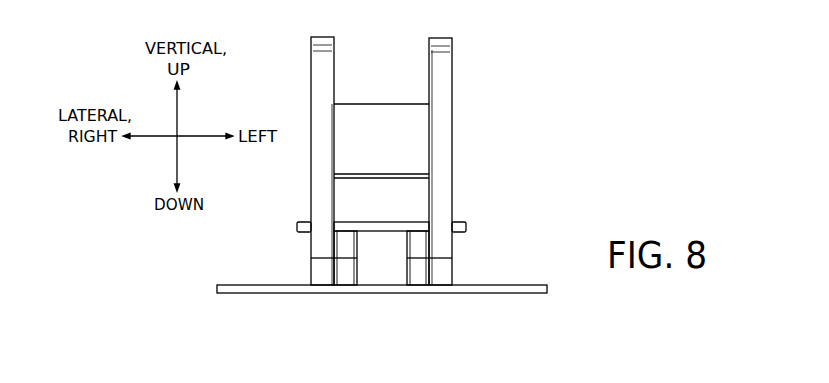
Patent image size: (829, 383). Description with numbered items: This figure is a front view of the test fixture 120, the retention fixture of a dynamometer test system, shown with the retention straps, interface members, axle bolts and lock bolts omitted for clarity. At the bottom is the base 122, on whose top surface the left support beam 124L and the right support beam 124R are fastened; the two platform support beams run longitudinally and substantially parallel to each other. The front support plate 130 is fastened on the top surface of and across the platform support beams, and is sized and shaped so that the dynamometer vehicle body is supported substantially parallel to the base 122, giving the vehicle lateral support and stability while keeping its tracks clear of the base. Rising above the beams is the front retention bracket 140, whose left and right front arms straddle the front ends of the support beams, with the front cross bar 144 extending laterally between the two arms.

The test fixture 120 is at (500, 63).
The base 122 is at (249, 294).
The right support beam 124R is at (334, 273).
The left support beam 124L is at (430, 275).
The front support plate 130 is at (458, 222).
The front retention bracket 140 is at (453, 72).
The front cross bar 144 is at (366, 104).